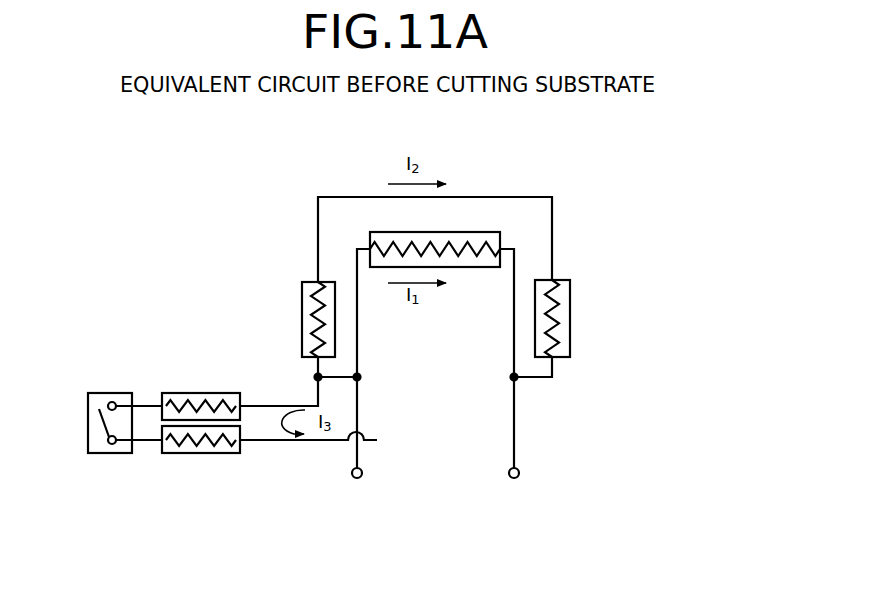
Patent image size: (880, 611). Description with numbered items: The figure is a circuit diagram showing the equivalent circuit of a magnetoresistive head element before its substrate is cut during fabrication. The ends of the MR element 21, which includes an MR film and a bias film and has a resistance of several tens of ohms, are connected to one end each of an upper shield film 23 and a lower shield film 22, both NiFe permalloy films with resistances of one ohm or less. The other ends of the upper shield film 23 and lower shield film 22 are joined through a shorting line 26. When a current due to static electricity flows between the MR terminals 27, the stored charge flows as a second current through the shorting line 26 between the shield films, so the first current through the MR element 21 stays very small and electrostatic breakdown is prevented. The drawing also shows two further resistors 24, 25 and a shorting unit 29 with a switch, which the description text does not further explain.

The MR element 21 is at (482, 232).
The lower shield film 22 is at (570, 335).
The upper shield film 23 is at (300, 340).
The resistor R3 24 is at (227, 454).
The resistor R4 25 is at (167, 391).
The shorting line 26 is at (552, 222).
The MR terminals 27 is at (362, 471).
The shorting unit 29 is at (107, 455).